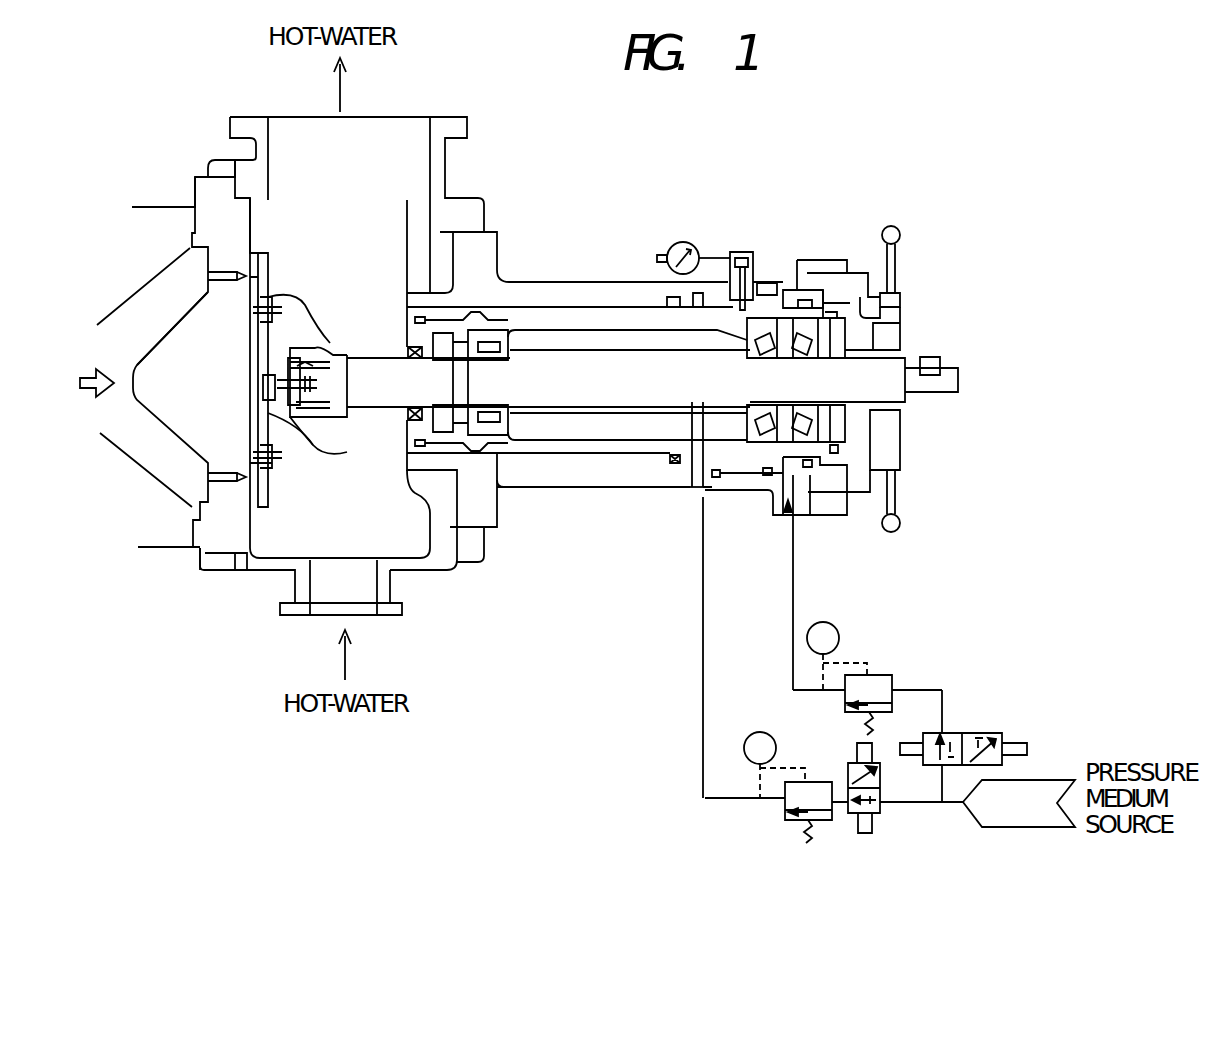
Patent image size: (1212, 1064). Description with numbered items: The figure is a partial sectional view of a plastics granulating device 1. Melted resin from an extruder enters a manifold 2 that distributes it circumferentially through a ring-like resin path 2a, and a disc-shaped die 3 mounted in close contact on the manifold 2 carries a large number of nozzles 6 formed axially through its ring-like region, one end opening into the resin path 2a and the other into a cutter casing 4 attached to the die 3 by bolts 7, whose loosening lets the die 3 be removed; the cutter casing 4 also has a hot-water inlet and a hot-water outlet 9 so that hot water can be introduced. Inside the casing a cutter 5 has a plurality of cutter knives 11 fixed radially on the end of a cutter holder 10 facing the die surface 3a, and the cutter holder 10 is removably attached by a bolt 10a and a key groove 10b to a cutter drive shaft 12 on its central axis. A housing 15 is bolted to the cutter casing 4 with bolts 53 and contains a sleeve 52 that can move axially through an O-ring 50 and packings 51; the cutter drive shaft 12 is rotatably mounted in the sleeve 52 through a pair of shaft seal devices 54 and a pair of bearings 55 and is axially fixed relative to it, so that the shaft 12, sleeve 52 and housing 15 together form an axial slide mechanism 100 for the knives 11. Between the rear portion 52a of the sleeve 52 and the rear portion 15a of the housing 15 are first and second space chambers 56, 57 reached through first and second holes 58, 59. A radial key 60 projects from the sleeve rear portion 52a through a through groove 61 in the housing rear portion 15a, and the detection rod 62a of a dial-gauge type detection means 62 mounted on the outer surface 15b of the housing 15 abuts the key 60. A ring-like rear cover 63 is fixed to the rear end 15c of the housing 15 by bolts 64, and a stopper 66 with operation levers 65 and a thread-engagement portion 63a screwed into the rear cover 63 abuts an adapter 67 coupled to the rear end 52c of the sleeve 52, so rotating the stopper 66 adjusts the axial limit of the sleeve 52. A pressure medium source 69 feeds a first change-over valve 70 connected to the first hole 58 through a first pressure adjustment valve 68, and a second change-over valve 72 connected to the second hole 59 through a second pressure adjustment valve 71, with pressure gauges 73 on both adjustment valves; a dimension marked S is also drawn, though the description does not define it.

The granulating device 1 is at (637, 178).
The manifold 2 is at (145, 213).
The resin path 2a is at (187, 467).
The die 3 is at (224, 217).
The die surface 3a is at (262, 253).
The cutter casing 4 is at (445, 205).
The cutter 5 is at (318, 262).
The nozzles 6 is at (245, 282).
The bolts 7 is at (193, 175).
The hot-water outlet 9 is at (415, 122).
The cutter holder 10 is at (300, 318).
The bolt 10a is at (327, 443).
The key groove 10b is at (330, 342).
The cutter knives 11 is at (268, 292).
The cutter drive shaft 12 is at (535, 408).
The housing 15 is at (585, 482).
The rear portion of housing 15a is at (735, 482).
The outer surface of housing 15b is at (602, 280).
The rear end of housing 15c is at (832, 297).
The O-ring 50 is at (407, 293).
The packings 51 is at (800, 292).
The sleeve 52 is at (502, 320).
The rear portion of sleeve 52a is at (747, 440).
The rear end of sleeve 52c is at (832, 293).
The bolts 53 is at (497, 232).
The shaft seal devices 54 is at (407, 420).
The bearings 55 is at (484, 427).
The first space chamber 56 is at (708, 490).
The second space chamber 57 is at (780, 485).
The first hole 58 is at (695, 497).
The second hole 59 is at (793, 515).
The key 60 is at (741, 243).
The through groove 61 is at (757, 282).
The detection means 62 is at (673, 242).
The detection rod 62a is at (722, 257).
The rear cover 63 is at (896, 250).
The thread-engagement portion 63a is at (873, 316).
The bolts 64 is at (848, 266).
The operation levers 65 is at (892, 493).
The stopper 66 is at (890, 430).
The adapter 67 is at (862, 300).
The first pressure adjustment valve 68 is at (776, 817).
The pressure medium source 69 is at (1047, 779).
The first change-over valve 70 is at (878, 820).
The second pressure adjustment valve 71 is at (893, 677).
The second change-over valve 72 is at (983, 733).
The pressure gauges 73 is at (841, 633).
The axial slide mechanism 100 is at (555, 262).
The axial clearance S is at (728, 405).